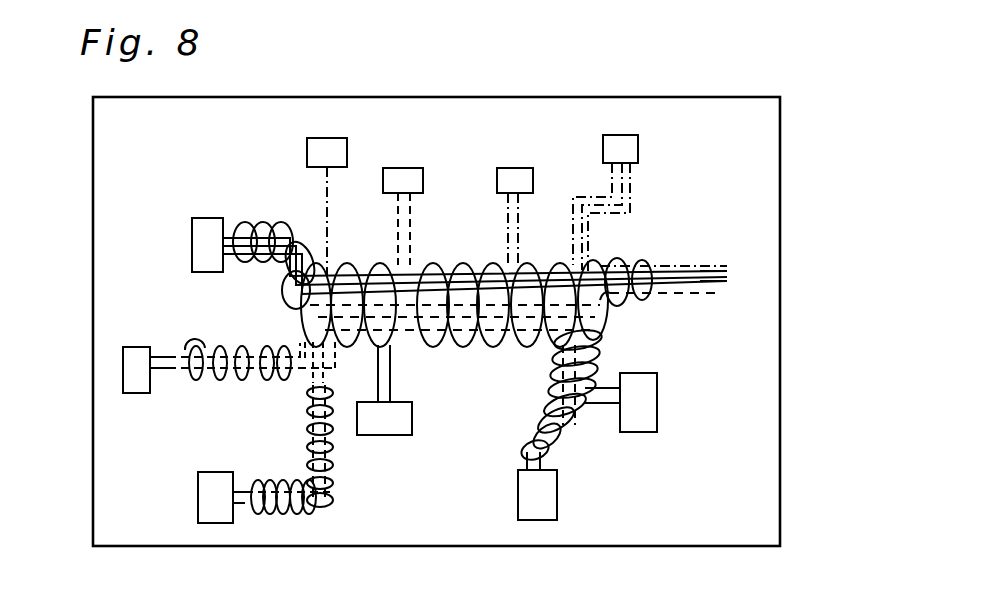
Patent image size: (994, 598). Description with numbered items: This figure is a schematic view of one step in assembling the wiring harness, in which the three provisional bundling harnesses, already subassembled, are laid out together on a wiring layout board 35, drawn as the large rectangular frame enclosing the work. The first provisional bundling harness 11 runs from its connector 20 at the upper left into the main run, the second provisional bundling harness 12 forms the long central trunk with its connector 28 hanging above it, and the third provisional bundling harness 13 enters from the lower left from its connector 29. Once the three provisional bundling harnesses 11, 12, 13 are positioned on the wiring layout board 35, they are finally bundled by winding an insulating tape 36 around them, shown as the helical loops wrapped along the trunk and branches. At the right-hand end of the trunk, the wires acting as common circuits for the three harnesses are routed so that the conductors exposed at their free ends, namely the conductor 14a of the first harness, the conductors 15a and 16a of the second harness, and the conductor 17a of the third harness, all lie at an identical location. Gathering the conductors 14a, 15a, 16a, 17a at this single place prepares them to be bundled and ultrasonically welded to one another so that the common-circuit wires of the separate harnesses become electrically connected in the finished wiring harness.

The first provisional bundling harness 11 is at (264, 264).
The second provisional bundling harness 12 is at (334, 223).
The third provisional bundling harness 13 is at (255, 382).
The conductor 14a is at (724, 292).
The conductor 15a is at (722, 270).
The conductor 16a is at (695, 266).
The conductor 17a is at (702, 295).
The connector 20 is at (213, 222).
The connector 28 is at (347, 140).
The connector 29 is at (135, 394).
The wiring layout board 35 is at (690, 92).
The insulating tape 36 is at (500, 346).